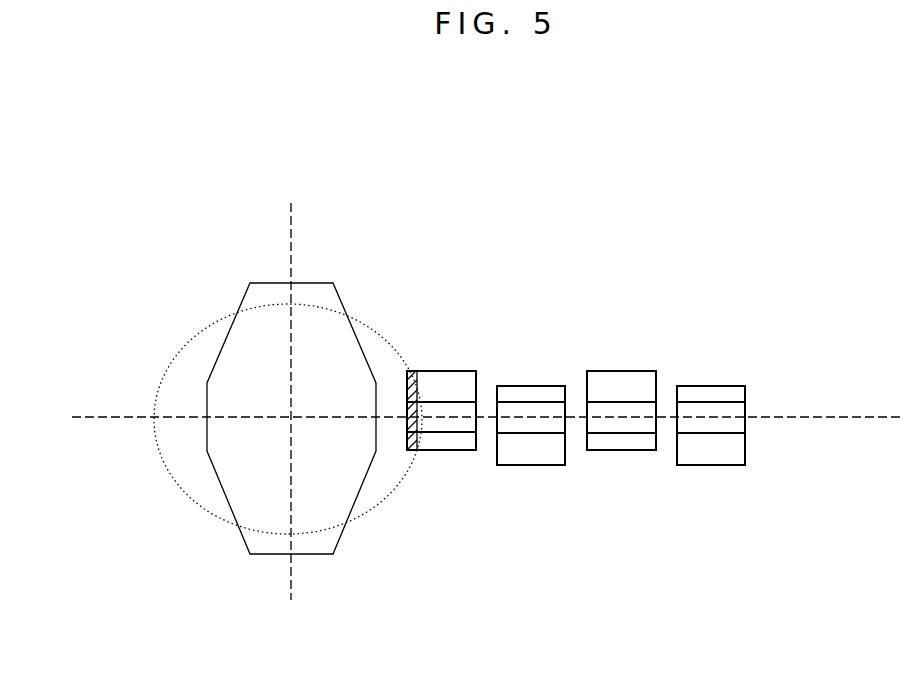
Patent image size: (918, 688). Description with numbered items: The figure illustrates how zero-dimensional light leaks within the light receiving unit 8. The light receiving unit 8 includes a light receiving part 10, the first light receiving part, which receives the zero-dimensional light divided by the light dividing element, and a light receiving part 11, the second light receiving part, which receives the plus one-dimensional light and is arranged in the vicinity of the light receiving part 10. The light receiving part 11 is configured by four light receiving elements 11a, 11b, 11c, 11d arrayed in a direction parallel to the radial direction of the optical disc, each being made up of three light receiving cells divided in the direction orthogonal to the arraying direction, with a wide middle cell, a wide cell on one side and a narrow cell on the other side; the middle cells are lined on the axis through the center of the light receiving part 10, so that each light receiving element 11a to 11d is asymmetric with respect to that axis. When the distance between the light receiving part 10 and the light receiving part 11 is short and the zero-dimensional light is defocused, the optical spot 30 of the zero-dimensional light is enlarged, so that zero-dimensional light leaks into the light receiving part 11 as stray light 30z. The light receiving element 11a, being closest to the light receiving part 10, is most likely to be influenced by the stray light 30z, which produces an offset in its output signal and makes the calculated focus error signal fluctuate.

The light receiving unit 8 is at (723, 242).
The light receiving part 10 is at (310, 283).
The optical spot 30 is at (195, 337).
The stray light 30z is at (408, 390).
The light receiving part 11 is at (568, 420).
The light receiving element 11a is at (447, 360).
The light receiving element 11b is at (538, 360).
The light receiving element 11c is at (617, 360).
The light receiving element 11d is at (715, 380).